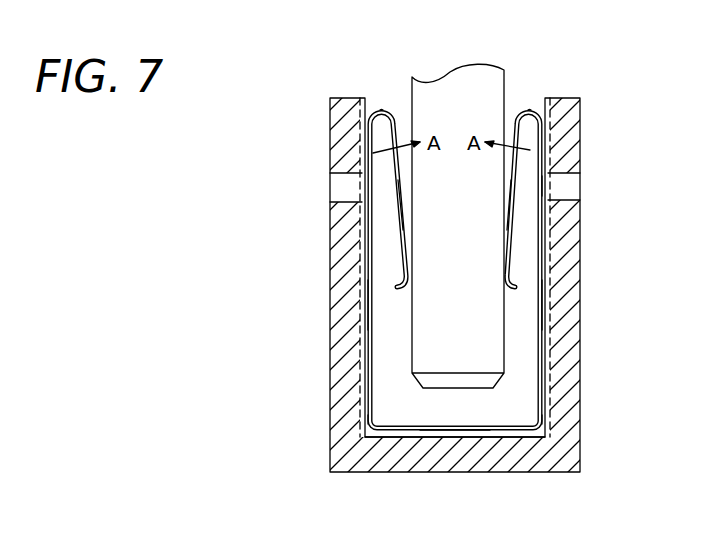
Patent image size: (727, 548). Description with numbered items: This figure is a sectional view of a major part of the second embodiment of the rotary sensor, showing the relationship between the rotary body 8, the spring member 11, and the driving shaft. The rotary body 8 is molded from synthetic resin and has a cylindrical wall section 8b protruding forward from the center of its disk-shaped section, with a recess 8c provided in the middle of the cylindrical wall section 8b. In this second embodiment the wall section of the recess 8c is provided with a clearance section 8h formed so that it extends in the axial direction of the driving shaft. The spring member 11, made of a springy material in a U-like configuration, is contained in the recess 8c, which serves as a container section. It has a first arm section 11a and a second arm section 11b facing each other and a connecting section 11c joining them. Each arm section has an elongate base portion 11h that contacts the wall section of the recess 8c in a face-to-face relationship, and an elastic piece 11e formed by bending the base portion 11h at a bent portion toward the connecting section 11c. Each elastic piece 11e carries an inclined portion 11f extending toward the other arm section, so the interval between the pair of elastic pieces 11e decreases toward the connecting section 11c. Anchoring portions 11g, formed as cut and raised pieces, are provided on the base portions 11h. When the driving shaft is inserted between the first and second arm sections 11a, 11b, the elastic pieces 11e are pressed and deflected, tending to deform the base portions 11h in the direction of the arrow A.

The rotary body 8 is at (330, 422).
The cylindrical wall section 8b is at (342, 188).
The recess 8c is at (510, 413).
The clearance section 8h is at (365, 118).
The spring member 11 is at (528, 99).
The first arm section 11a is at (368, 305).
The second arm section 11b is at (537, 314).
The connecting section 11c is at (478, 431).
The elastic piece 11e is at (393, 99).
The inclined portion 11f is at (398, 208).
The anchoring portion 11g is at (548, 172).
The base portion 11h is at (373, 353).